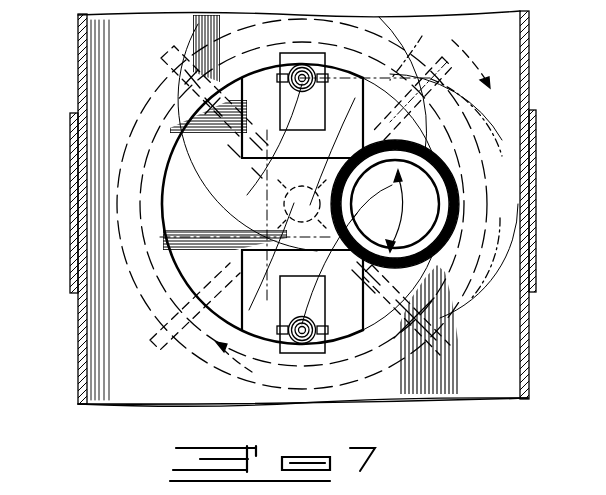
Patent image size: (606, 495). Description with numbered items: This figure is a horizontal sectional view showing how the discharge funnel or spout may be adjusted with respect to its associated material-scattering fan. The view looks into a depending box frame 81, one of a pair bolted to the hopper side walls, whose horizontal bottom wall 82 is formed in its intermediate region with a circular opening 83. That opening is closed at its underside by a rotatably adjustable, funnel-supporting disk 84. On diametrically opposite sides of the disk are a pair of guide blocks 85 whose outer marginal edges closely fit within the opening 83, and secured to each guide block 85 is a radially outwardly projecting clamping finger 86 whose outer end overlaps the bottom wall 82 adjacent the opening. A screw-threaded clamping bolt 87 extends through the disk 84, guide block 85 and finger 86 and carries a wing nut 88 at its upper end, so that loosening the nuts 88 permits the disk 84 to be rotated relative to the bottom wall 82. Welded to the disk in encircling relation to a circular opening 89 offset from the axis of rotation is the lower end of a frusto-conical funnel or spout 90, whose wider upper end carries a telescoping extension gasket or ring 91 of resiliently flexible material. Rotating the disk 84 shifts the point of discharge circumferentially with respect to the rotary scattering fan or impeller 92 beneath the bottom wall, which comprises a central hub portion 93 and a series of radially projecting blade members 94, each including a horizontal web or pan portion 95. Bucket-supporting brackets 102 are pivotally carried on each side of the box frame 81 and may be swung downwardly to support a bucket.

The box frame 81 is at (527, 363).
The bottom wall 82 is at (482, 387).
The circular opening 83 is at (157, 141).
The funnel-supporting disk 84 is at (161, 213).
The guide block 85 is at (263, 160).
The clamping finger 86 is at (326, 120).
The clamping bolt 87 is at (303, 88).
The wing nut 88 is at (278, 78).
The circular opening 89 is at (400, 236).
The funnel 90 is at (452, 228).
The extension gasket 91 is at (500, 300).
The scattering fan 92 is at (408, 386).
The hub portion 93 is at (287, 178).
The blade member 94 is at (170, 47).
The pan portion 95 is at (464, 92).
The bucket-supporting bracket 102 is at (70, 270).